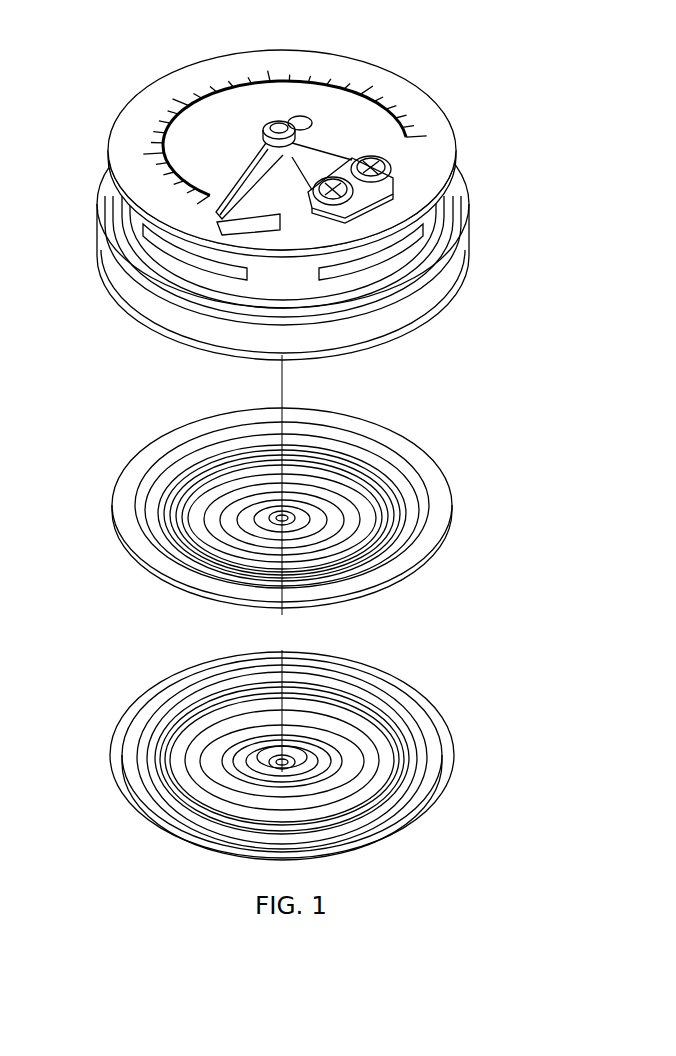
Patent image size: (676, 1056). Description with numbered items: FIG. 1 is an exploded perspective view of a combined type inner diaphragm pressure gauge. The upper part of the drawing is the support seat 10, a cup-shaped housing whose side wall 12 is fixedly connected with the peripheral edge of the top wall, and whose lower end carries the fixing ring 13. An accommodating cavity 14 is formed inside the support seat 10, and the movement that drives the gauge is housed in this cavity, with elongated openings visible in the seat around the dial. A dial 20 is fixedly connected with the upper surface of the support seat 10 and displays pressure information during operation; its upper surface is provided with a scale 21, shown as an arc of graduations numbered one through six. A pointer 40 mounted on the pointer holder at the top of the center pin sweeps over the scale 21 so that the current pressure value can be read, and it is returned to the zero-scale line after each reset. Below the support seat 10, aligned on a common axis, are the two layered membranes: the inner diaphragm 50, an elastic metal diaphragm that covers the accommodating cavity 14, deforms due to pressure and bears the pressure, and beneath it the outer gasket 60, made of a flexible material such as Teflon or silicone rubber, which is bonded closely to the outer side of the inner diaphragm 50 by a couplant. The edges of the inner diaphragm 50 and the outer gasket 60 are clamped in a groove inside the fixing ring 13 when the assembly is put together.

The support seat 10 is at (468, 240).
The side wall 12 is at (353, 285).
The fixing ring 13 is at (445, 283).
The accommodating cavity 14 is at (177, 247).
The dial 20 is at (413, 102).
The scale 21 is at (338, 88).
The pointer 40 is at (227, 192).
The inner diaphragm 50 is at (446, 478).
The outer gasket 60 is at (437, 712).